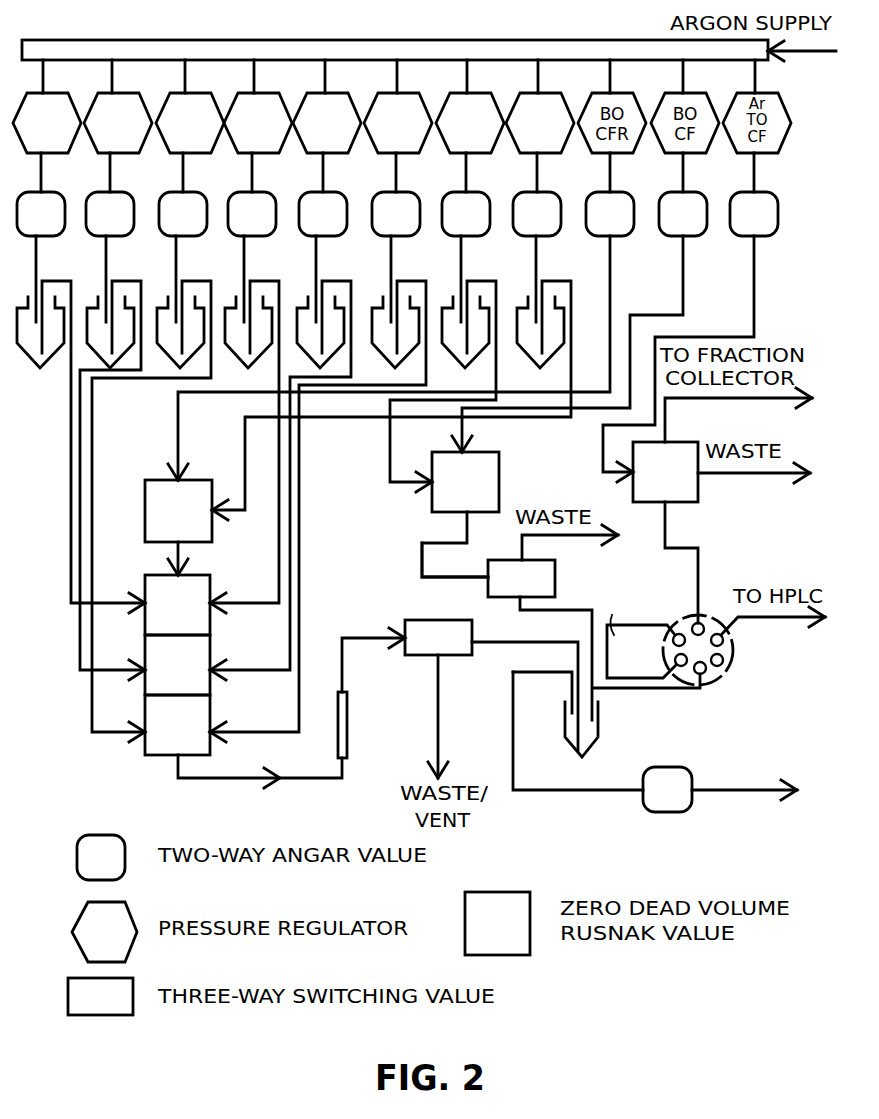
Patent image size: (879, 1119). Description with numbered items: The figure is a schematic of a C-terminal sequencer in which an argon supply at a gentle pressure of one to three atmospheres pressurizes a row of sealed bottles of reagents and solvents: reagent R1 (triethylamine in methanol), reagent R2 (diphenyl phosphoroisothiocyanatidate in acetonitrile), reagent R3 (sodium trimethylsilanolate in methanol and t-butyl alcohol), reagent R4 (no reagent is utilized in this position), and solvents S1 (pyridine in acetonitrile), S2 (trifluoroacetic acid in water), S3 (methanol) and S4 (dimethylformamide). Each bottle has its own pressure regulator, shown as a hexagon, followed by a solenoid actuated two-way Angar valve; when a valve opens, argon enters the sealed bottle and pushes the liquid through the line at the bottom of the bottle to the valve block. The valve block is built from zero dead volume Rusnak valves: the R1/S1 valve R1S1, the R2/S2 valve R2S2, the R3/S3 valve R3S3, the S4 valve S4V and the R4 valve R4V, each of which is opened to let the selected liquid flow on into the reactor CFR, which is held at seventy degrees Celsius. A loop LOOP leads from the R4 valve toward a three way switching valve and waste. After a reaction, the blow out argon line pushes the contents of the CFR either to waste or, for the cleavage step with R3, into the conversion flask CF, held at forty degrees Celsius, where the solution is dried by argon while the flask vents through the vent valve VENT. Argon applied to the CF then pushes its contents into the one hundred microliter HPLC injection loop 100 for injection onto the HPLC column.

The reagent R1 is at (47, 123).
The reagent R2 is at (118, 123).
The reagent R3 is at (190, 123).
The solvent S1 is at (258, 123).
The solvent S2 is at (327, 123).
The solvent S3 is at (398, 123).
The reagent R4 is at (470, 123).
The solvent S4 is at (540, 123).
The S4 zero dead volume Rusnak valve S4V is at (178, 511).
The R4 zero dead volume Rusnak valve R4V is at (465, 482).
The R1/S1 Rusnak valve R1S1 is at (177, 605).
The R2/S2 Rusnak valve R2S2 is at (177, 665).
The R3/S3 Rusnak valve R3S3 is at (177, 725).
The reactor CFR is at (364, 725).
The conversion flask CF is at (555, 714).
The loop LOOP is at (455, 560).
The 100 μl HPLC injection loop 100 is at (638, 625).
The vent valve VENT is at (671, 805).